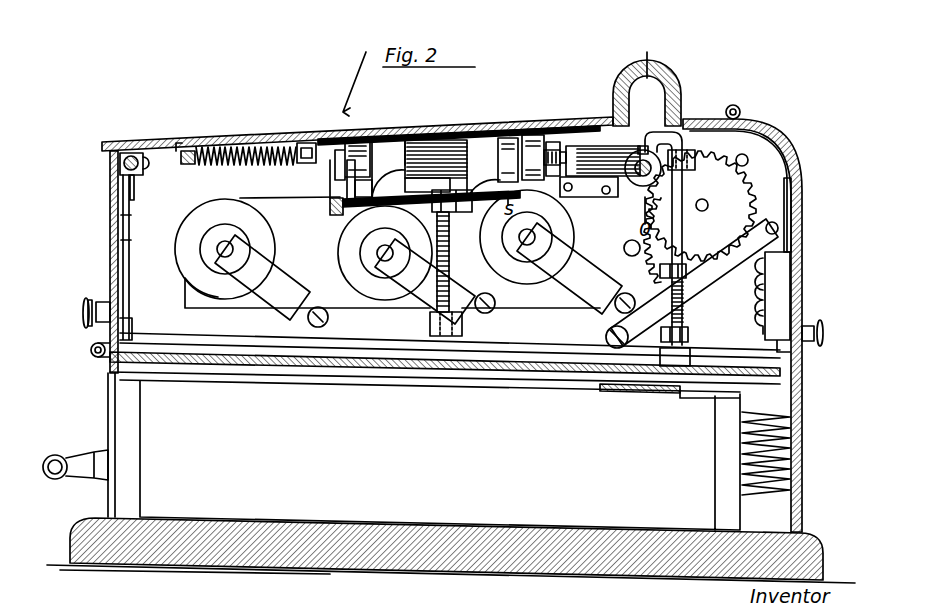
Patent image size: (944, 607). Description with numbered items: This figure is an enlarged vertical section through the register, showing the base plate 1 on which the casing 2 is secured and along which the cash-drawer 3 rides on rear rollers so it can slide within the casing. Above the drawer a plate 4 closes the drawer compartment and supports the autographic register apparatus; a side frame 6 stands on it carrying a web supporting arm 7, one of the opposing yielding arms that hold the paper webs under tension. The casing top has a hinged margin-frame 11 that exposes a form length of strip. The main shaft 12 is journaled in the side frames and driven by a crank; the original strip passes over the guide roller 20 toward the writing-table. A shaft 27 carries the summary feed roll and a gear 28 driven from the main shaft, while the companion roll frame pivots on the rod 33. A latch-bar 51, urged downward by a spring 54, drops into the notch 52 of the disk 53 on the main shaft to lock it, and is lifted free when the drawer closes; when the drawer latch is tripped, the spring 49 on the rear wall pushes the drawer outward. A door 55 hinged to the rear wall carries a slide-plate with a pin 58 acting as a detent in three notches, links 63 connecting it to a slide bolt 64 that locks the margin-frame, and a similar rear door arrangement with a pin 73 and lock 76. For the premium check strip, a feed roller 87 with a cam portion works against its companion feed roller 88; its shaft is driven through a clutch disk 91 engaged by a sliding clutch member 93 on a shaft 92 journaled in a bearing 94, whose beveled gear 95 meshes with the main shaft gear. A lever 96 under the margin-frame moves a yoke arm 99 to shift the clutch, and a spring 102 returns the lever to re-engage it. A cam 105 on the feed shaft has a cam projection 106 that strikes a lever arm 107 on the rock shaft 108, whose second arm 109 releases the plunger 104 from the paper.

The base plate 1 is at (420, 562).
The casing 2 is at (795, 466).
The cash-drawer 3 is at (144, 426).
The plate 4 is at (424, 376).
The side frame 6 is at (292, 193).
The web supporting arm 7 is at (264, 297).
The margin-frame 11 is at (174, 141).
The shaft 12 is at (661, 168).
The guide roller 20 is at (713, 274).
The shaft 27 is at (700, 217).
The gear 28 is at (747, 206).
The rod 33 is at (632, 257).
The spring 49 is at (791, 414).
The latch-bar 51 is at (690, 344).
The notch 52 is at (624, 118).
The disk 53 is at (640, 187).
The spring 54 is at (686, 320).
The door 55 is at (119, 221).
The pin 58 is at (86, 317).
The links 63 is at (128, 186).
The slide bolt 64 is at (120, 163).
The pin 73 is at (823, 334).
The lock 76 is at (783, 288).
The feed roller 87 is at (404, 142).
The companion feed roller 88 is at (452, 138).
The clutch disk 91 is at (502, 136).
The shaft 92 is at (562, 128).
The sliding clutch member 93 is at (531, 133).
The bearing 94 is at (589, 194).
The beveled gear 95 is at (586, 121).
The lever 96 is at (306, 141).
The yoke arm 99 is at (552, 140).
The spring 102 is at (247, 145).
The plunger 104 is at (455, 246).
The cam 105 is at (352, 138).
The cam projection 106 is at (345, 166).
The lever arm 107 is at (353, 184).
The rock shaft 108 is at (332, 224).
The second arm 109 is at (435, 212).